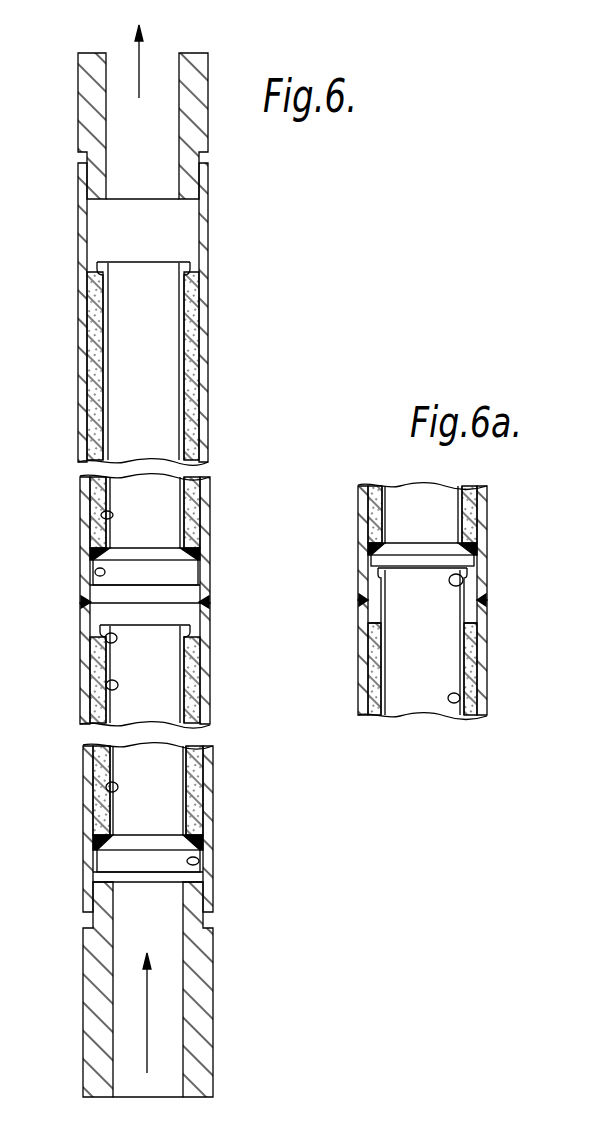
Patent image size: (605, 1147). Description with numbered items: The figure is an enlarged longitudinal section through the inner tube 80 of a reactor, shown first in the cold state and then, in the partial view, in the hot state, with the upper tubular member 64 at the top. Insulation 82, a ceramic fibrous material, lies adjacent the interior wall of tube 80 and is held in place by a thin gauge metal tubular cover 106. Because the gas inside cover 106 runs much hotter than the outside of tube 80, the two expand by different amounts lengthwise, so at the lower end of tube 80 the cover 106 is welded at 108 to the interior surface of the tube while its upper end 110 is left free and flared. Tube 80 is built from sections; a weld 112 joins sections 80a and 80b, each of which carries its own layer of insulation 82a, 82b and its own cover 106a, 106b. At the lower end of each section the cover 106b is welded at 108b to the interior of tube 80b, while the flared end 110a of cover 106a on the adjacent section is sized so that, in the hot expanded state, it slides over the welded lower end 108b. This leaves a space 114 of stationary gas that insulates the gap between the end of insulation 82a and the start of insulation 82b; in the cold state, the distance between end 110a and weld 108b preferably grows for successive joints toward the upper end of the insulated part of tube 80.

In FIG. 6, the upper tubular housing 64 is at (179, 53).
In FIG. 6, the upper end of cover 110 is at (194, 267).
In FIG. 6, the flared end of cover 110a is at (104, 640).
In FIG. 6A, the flared end of cover 110a is at (463, 580).
In FIG. 6, the tube 80 is at (214, 785).
In FIG. 6, the tube section 80a is at (211, 653).
In FIG. 6A, the tube section 80a is at (488, 675).
In FIG. 6, the tube section 80b is at (212, 540).
In FIG. 6A, the tube section 80b is at (488, 532).
In FIG. 6, the insulation 82 is at (197, 767).
In FIG. 6, the insulation layer 82a is at (192, 690).
In FIG. 6A, the insulation layer 82a is at (468, 660).
In FIG. 6, the insulation layer 82b is at (199, 505).
In FIG. 6A, the insulation layer 82b is at (482, 498).
In FIG. 6, the tubular cover 106 is at (106, 786).
In FIG. 6, the cover 106a is at (106, 687).
In FIG. 6A, the cover 106a is at (460, 698).
In FIG. 6, the cover 106b is at (101, 516).
In FIG. 6, the weld 108 is at (199, 861).
In FIG. 6, the weld 108b is at (95, 572).
In FIG. 6A, the weld 108b is at (482, 565).
In FIG. 6, the weld 112 is at (84, 602).
In FIG. 6A, the weld 112 is at (362, 600).
In FIG. 6A, the space 114 is at (470, 612).